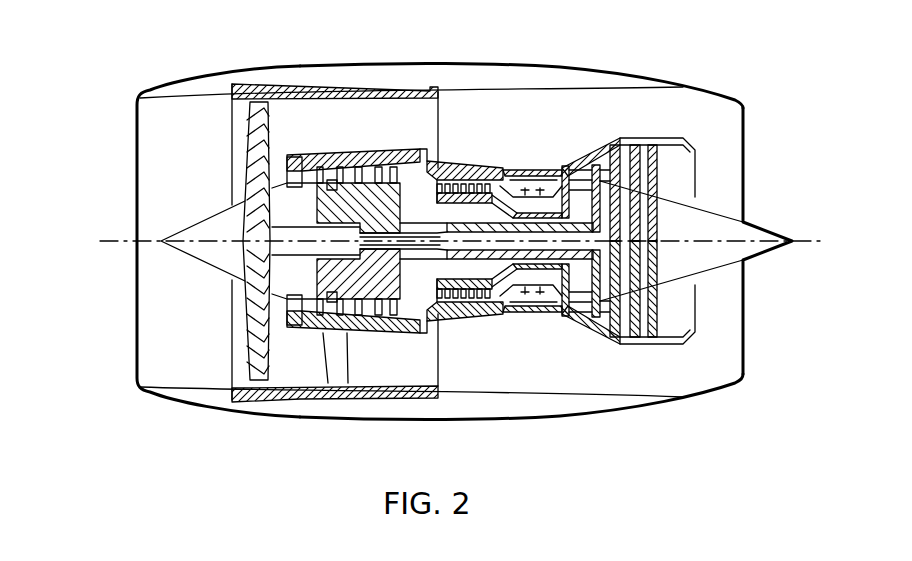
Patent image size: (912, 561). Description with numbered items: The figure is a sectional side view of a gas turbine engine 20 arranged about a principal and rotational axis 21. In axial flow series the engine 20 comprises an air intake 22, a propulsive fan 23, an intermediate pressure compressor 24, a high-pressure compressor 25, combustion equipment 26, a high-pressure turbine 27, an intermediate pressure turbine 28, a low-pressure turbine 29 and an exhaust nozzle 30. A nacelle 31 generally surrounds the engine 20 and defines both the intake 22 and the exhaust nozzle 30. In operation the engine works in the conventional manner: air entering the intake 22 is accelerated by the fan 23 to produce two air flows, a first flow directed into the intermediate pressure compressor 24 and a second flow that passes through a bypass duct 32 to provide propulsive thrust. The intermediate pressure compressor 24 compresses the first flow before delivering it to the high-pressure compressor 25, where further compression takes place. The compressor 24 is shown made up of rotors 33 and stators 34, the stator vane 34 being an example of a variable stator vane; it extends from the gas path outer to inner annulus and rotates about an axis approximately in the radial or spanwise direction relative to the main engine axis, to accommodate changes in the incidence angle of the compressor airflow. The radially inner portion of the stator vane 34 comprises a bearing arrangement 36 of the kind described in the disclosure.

The gas turbine engine 20 is at (112, 130).
The principal and rotational axis 21 is at (157, 242).
The air intake 22 is at (195, 96).
The propulsive fan 23 is at (250, 347).
The intermediate pressure compressor 24 is at (370, 310).
The high-pressure compressor 25 is at (473, 170).
The combustion equipment 26 is at (515, 313).
The high-pressure turbine 27 is at (563, 313).
The intermediate pressure turbine 28 is at (591, 160).
The low-pressure turbine 29 is at (612, 318).
The exhaust nozzle 30 is at (743, 362).
The nacelle 31 is at (588, 66).
The bypass duct 32 is at (423, 136).
The rotors 33 is at (352, 173).
The stator vane 34 is at (333, 170).
The bearing arrangement 36 is at (327, 187).